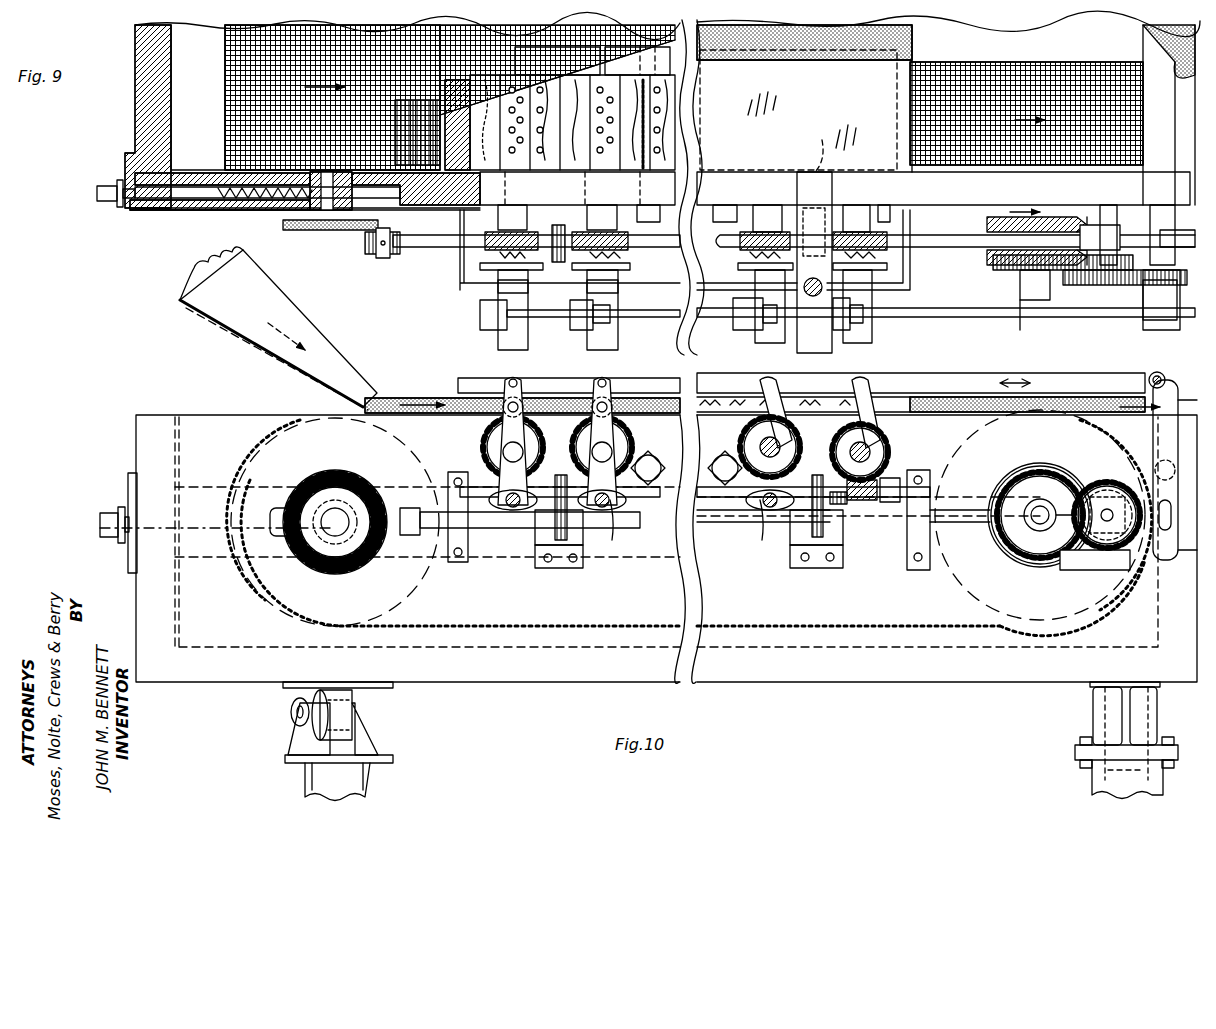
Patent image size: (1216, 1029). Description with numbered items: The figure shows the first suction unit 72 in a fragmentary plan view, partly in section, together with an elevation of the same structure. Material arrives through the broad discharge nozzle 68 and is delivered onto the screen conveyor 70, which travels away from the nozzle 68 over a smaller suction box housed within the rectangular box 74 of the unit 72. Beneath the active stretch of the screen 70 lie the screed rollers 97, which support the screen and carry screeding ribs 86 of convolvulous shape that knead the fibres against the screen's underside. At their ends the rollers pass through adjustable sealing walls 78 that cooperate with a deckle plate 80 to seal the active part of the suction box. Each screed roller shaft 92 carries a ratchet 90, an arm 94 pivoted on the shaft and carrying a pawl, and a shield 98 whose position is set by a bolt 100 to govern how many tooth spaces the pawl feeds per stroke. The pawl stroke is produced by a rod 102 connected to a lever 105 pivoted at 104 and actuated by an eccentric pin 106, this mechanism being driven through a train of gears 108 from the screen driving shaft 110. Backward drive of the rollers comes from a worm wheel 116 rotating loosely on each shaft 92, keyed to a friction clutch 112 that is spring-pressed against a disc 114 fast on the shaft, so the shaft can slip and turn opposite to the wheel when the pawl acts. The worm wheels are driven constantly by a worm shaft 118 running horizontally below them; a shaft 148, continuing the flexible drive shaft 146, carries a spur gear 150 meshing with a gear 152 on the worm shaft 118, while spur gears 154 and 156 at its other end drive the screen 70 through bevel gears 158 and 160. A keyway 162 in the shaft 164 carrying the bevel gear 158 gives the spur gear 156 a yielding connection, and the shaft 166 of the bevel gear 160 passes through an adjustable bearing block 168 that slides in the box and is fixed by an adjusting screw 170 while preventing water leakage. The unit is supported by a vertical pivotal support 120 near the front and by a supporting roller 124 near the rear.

In FIG. 9, the discharge nozzle 68 is at (300, 322).
In FIG. 9, the screen conveyor 70 is at (226, 72).
In FIG. 10, the screen conveyor 70 is at (278, 418).
In FIG. 9, the suction unit 72 is at (132, 130).
In FIG. 10, the suction unit 72 is at (185, 410).
In FIG. 9, the rectangular box 74 is at (135, 100).
In FIG. 10, the rectangular box 74 is at (222, 418).
In FIG. 9, the adjustable sealing walls 78 is at (670, 62).
In FIG. 9, the deckle plate 80 is at (870, 166).
In FIG. 9, the screeding ribs 86 is at (432, 125).
In FIG. 10, the ratchet 90 is at (648, 456).
In FIG. 9, the screed roller shaft 92 is at (530, 338).
In FIG. 10, the screed roller shaft 92 is at (485, 470).
In FIG. 9, the arm 94 is at (600, 340).
In FIG. 10, the arm 94 is at (652, 422).
In FIG. 9, the screed rollers 97 is at (557, 115).
In FIG. 9, the shield 98 is at (681, 290).
In FIG. 10, the shield 98 is at (495, 420).
In FIG. 10, the bolt 100 is at (612, 520).
In FIG. 9, the rod 102 is at (640, 320).
In FIG. 10, the rod 102 is at (810, 390).
In FIG. 9, the pivot 104 is at (1150, 250).
In FIG. 10, the pivot 104 is at (1140, 462).
In FIG. 9, the lever 105 is at (1143, 327).
In FIG. 10, the lever 105 is at (1160, 440).
In FIG. 9, the eccentric pin 106 is at (1160, 310).
In FIG. 10, the eccentric pin 106 is at (1140, 490).
In FIG. 9, the train of gears 108 is at (1128, 305).
In FIG. 10, the train of gears 108 is at (1118, 552).
In FIG. 9, the screen driving shaft 110 is at (1025, 300).
In FIG. 10, the screen driving shaft 110 is at (1035, 528).
In FIG. 9, the friction clutch 112 is at (462, 287).
In FIG. 10, the friction clutch 112 is at (607, 522).
In FIG. 9, the disc 114 is at (485, 300).
In FIG. 9, the worm wheel 116 is at (498, 252).
In FIG. 10, the worm wheel 116 is at (875, 500).
In FIG. 9, the worm shaft 118 is at (690, 257).
In FIG. 10, the worm shaft 118 is at (655, 497).
In FIG. 10, the vertical pivotal support 120 is at (1100, 719).
In FIG. 10, the supporting roller 124 is at (370, 708).
In FIG. 9, the flexible drive shaft 146 is at (1140, 235).
In FIG. 10, the flexible drive shaft 146 is at (1168, 535).
In FIG. 9, the shaft 148 is at (950, 240).
In FIG. 10, the shaft 148 is at (948, 520).
In FIG. 9, the spur gear 150 is at (558, 243).
In FIG. 10, the spur gear 150 is at (560, 545).
In FIG. 10, the gear 152 is at (560, 470).
In FIG. 9, the spur gear 154 is at (556, 222).
In FIG. 10, the spur gear 154 is at (814, 448).
In FIG. 10, the spur gear 156 is at (372, 500).
In FIG. 9, the bevel gear 158 is at (362, 231).
In FIG. 9, the bevel gear 160 is at (300, 200).
In FIG. 10, the bevel gear 160 is at (350, 470).
In FIG. 10, the keyway 162 is at (605, 520).
In FIG. 9, the shaft 164 is at (395, 256).
In FIG. 10, the shaft 164 is at (510, 515).
In FIG. 9, the shaft 166 is at (327, 198).
In FIG. 10, the shaft 166 is at (333, 528).
In FIG. 9, the bearing block 168 is at (265, 201).
In FIG. 10, the bearing block 168 is at (292, 560).
In FIG. 9, the adjusting screw 170 is at (97, 193).
In FIG. 10, the adjusting screw 170 is at (118, 500).